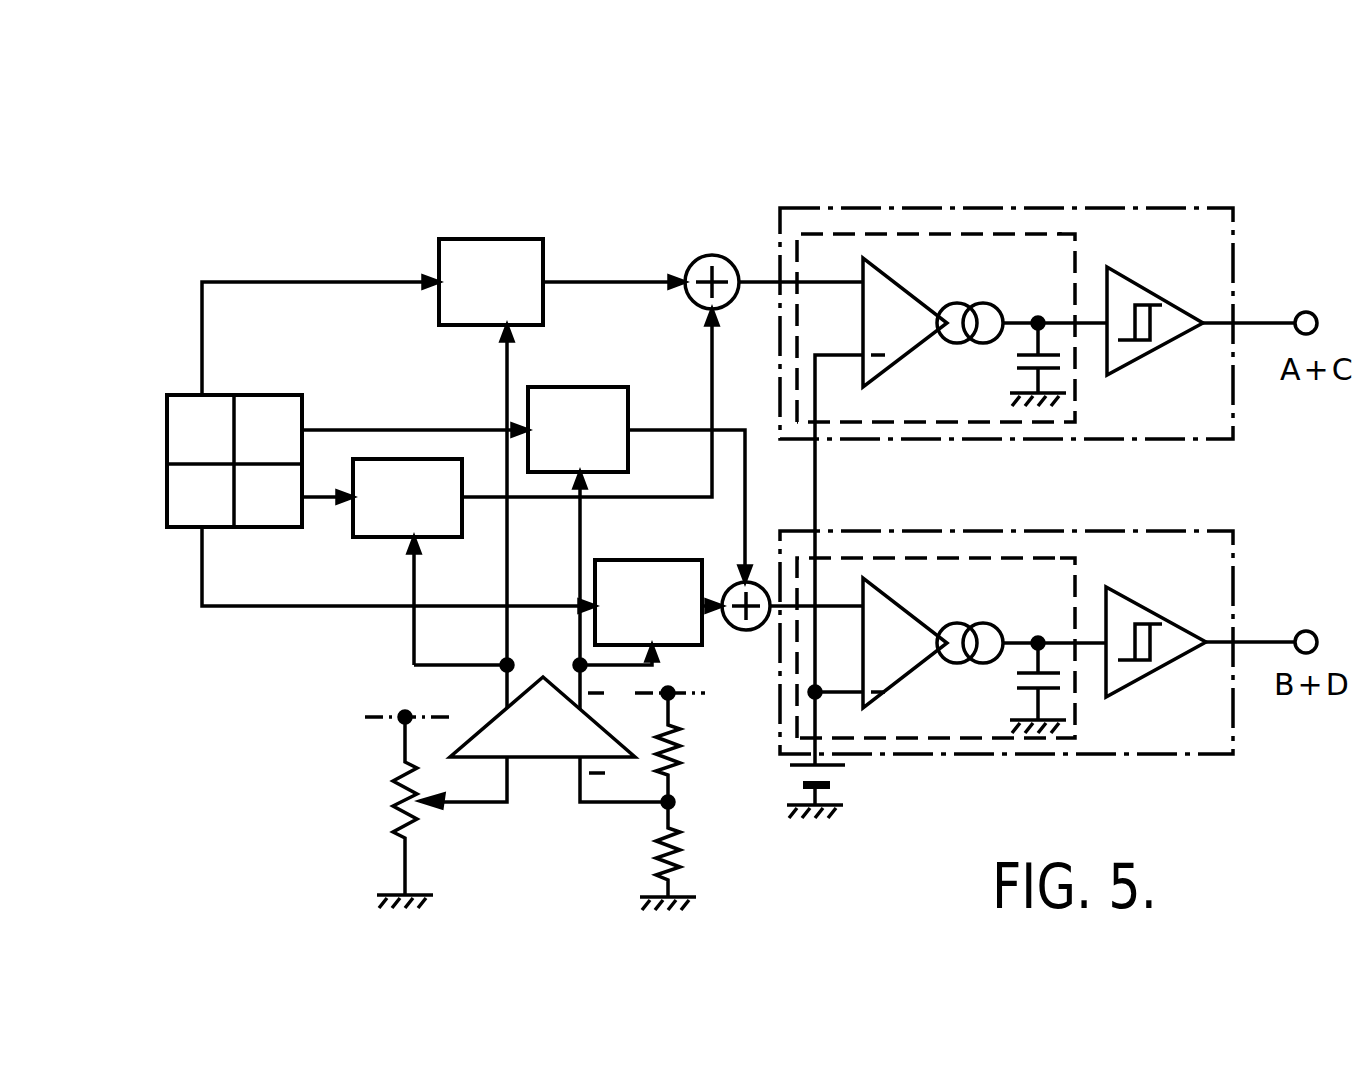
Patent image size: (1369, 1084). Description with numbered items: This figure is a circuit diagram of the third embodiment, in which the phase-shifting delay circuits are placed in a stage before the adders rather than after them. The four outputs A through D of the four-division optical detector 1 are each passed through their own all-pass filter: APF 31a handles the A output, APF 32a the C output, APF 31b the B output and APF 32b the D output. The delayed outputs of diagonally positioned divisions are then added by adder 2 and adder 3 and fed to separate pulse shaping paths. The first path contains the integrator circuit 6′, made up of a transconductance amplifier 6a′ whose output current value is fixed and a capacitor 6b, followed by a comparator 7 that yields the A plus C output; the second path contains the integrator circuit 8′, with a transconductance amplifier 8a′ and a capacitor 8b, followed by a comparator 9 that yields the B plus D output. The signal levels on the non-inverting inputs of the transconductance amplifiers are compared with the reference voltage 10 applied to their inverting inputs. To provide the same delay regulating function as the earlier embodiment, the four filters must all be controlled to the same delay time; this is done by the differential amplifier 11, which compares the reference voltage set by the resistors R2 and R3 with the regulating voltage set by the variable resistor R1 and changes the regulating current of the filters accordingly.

The 4-division optical detector 1 is at (167, 487).
The adder 2 is at (712, 255).
The adder 3 is at (746, 630).
The APF 31a is at (492, 239).
The APF 31b is at (580, 387).
The APF 32a is at (373, 539).
The APF 32b is at (635, 560).
The integrator circuit 6′ is at (1062, 232).
The transconductance amplifier 6a′ is at (915, 292).
The capacitor 6b is at (1013, 358).
The comparator 7 is at (1145, 286).
The integrator circuit 8′ is at (1065, 557).
The transconductance amplifier 8a′ is at (915, 612).
The capacitor 8b is at (1013, 678).
The comparator 9 is at (1150, 606).
The reference voltage 10 is at (832, 776).
The differential amplifier 11 is at (547, 757).
The variable resistor R1 is at (403, 809).
The resistor R2 is at (680, 747).
The resistor R3 is at (682, 856).